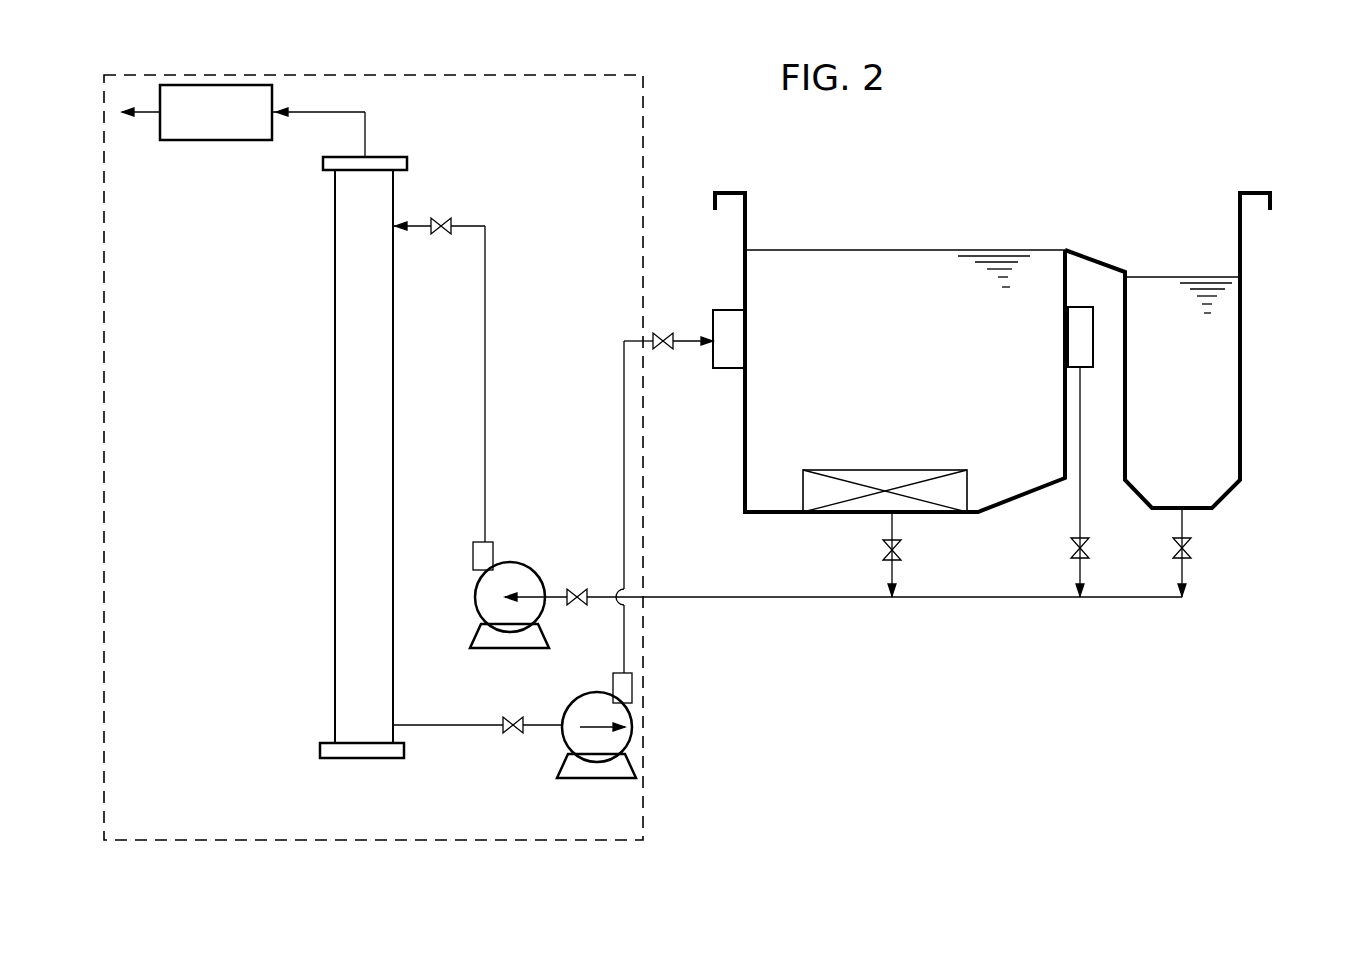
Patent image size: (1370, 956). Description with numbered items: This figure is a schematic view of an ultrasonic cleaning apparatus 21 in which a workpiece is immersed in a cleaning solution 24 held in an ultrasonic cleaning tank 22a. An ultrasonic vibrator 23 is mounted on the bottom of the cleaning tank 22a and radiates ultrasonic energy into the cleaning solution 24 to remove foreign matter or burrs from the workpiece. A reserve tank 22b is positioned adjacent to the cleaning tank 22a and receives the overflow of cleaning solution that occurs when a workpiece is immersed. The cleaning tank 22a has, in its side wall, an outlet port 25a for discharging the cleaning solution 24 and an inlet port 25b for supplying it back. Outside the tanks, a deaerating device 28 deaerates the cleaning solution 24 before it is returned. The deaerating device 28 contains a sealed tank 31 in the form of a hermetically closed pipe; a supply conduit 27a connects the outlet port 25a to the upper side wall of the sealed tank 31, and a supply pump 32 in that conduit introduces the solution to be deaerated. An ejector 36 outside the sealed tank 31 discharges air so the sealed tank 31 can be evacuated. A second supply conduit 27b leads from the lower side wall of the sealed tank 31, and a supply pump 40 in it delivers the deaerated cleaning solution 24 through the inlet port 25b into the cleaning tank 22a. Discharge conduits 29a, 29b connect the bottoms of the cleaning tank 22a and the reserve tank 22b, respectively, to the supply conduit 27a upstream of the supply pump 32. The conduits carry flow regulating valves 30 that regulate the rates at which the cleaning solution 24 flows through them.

The ultrasonic cleaning apparatus 21 is at (940, 232).
The ultrasonic cleaning tank 22a is at (1003, 510).
The reserve tank 22b is at (1242, 377).
The ultrasonic vibrator 23 is at (803, 490).
The cleaning solution 24 is at (773, 430).
The outlet port 25a is at (1085, 307).
The inlet port 25b is at (725, 310).
The supply conduit 27a is at (485, 331).
The supply conduit 27b is at (624, 451).
The deaerating device 28 is at (645, 808).
The discharge conduit 29a is at (900, 575).
The discharge conduit 29b is at (1185, 575).
The flow regulating valve 30 is at (441, 218).
The sealed tank 31 is at (335, 463).
The supply pump 32 is at (527, 565).
The ejector 36 is at (240, 142).
The supply pump 40 is at (633, 727).